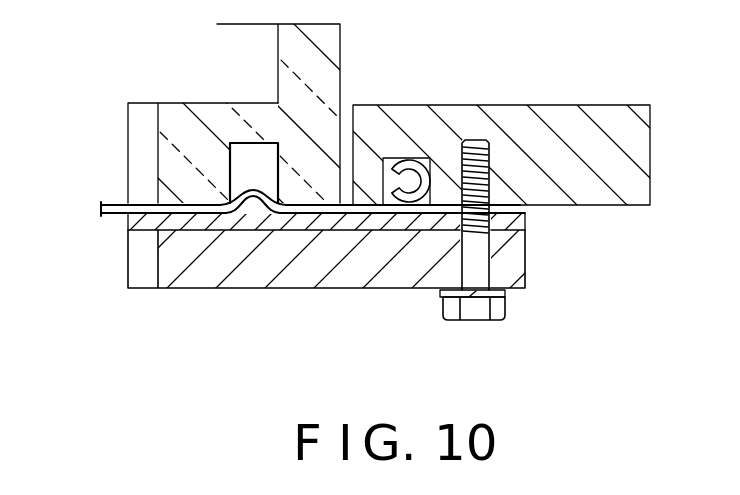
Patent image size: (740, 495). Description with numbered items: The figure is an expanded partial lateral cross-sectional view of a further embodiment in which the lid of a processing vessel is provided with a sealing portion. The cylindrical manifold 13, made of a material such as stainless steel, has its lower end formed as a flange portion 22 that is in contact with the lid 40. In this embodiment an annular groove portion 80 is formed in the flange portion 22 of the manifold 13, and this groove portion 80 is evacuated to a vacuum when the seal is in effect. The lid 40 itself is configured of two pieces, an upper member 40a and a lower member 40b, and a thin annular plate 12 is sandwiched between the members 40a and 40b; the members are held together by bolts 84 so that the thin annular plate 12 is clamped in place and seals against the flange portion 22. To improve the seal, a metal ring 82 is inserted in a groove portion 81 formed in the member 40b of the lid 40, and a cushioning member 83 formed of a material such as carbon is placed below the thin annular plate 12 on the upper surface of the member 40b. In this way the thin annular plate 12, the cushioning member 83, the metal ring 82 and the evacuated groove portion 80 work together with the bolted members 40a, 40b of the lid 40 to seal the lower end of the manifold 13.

The thin annular plate 12 is at (110, 198).
The manifold 13 is at (340, 50).
The flange portion 22 is at (173, 112).
The lid 40 is at (512, 324).
The upper member 40a is at (247, 283).
The lower member 40b is at (598, 205).
The annular groove portion 80 is at (247, 157).
The groove portion 81 is at (420, 160).
The metal ring 82 is at (398, 160).
The cushioning member 83 is at (162, 232).
The bolts 84 is at (483, 267).